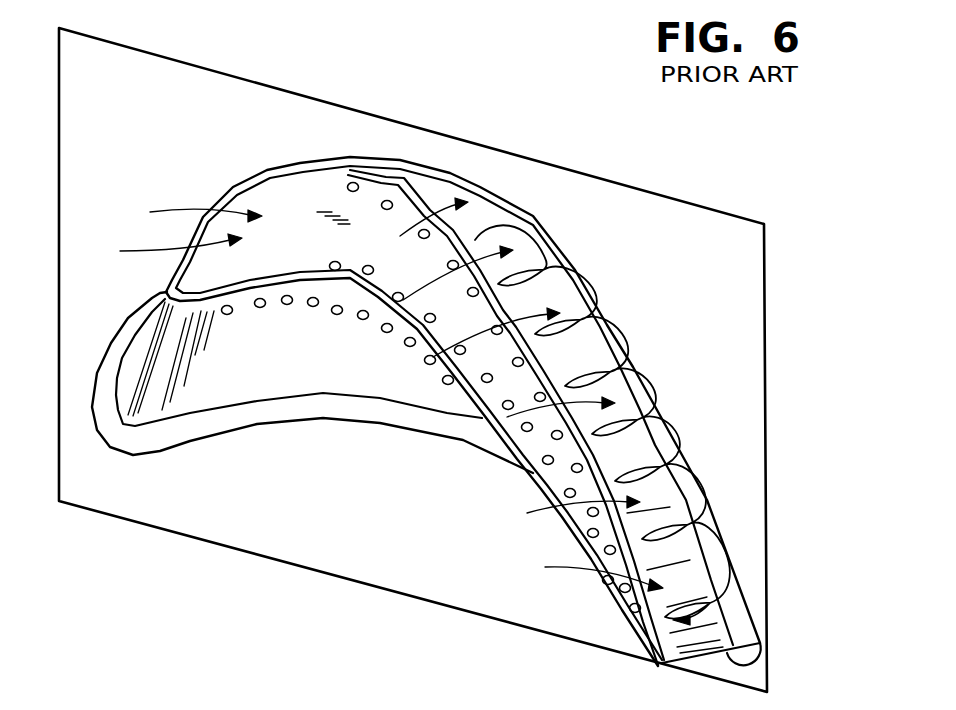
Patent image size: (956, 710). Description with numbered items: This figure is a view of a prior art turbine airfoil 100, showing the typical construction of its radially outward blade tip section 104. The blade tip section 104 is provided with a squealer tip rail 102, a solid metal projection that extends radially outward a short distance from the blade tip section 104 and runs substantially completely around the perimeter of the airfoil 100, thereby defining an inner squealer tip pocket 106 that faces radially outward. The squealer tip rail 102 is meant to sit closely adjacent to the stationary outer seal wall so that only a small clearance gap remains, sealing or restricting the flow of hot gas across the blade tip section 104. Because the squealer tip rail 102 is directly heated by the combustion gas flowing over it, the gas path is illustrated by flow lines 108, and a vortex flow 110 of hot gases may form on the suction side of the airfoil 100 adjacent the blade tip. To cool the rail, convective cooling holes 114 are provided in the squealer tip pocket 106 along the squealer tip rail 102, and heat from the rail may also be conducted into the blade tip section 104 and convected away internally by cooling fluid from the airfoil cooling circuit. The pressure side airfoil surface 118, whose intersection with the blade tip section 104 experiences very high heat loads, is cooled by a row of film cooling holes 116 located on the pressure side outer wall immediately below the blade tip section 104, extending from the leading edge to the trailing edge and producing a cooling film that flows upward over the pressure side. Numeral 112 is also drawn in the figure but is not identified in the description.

The airfoil 100 is at (263, 140).
The squealer tip rail 102 is at (200, 275).
The blade tip section 104 is at (272, 195).
The squealer tip pocket 106 is at (326, 197).
The flow lines 108 is at (366, 343).
The vortex flow 110 is at (660, 412).
The vortex flow 112 is at (560, 273).
The convective cooling holes 114 is at (354, 183).
The film cooling holes 116 is at (360, 316).
The pressure side airfoil surface 118 is at (203, 393).